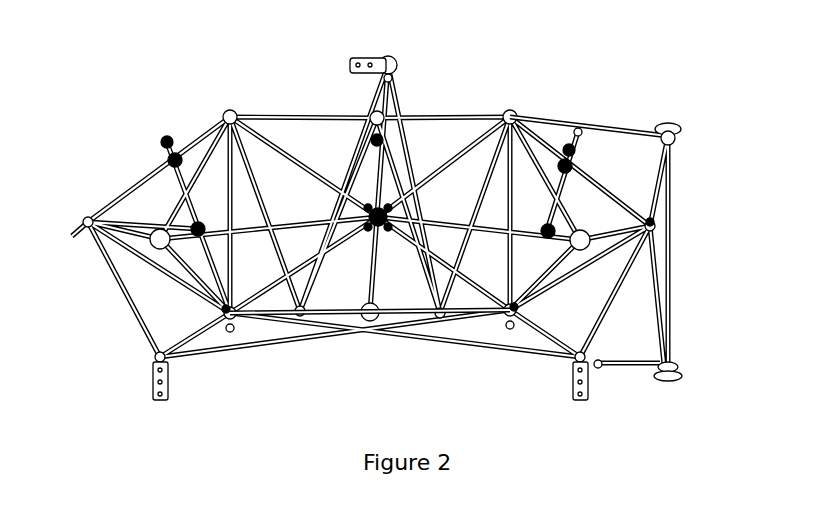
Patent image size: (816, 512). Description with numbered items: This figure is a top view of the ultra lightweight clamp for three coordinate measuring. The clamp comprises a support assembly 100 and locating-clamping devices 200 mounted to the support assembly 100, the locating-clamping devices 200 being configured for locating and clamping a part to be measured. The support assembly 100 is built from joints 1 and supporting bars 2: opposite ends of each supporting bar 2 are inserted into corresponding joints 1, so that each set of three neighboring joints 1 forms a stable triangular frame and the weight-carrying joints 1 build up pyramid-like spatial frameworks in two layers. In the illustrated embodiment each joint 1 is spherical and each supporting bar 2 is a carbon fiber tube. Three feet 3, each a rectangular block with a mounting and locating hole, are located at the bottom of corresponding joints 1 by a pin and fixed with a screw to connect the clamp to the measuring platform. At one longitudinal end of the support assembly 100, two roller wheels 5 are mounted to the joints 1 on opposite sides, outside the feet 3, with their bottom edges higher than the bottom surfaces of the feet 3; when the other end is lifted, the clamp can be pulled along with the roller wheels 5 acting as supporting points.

The joint 1 is at (516, 110).
The supporting bar 2 is at (608, 133).
The foot 3 is at (566, 386).
The roller wheel 5 is at (681, 128).
The support assembly 100 is at (333, 322).
The locating-clamping device 200 is at (372, 208).